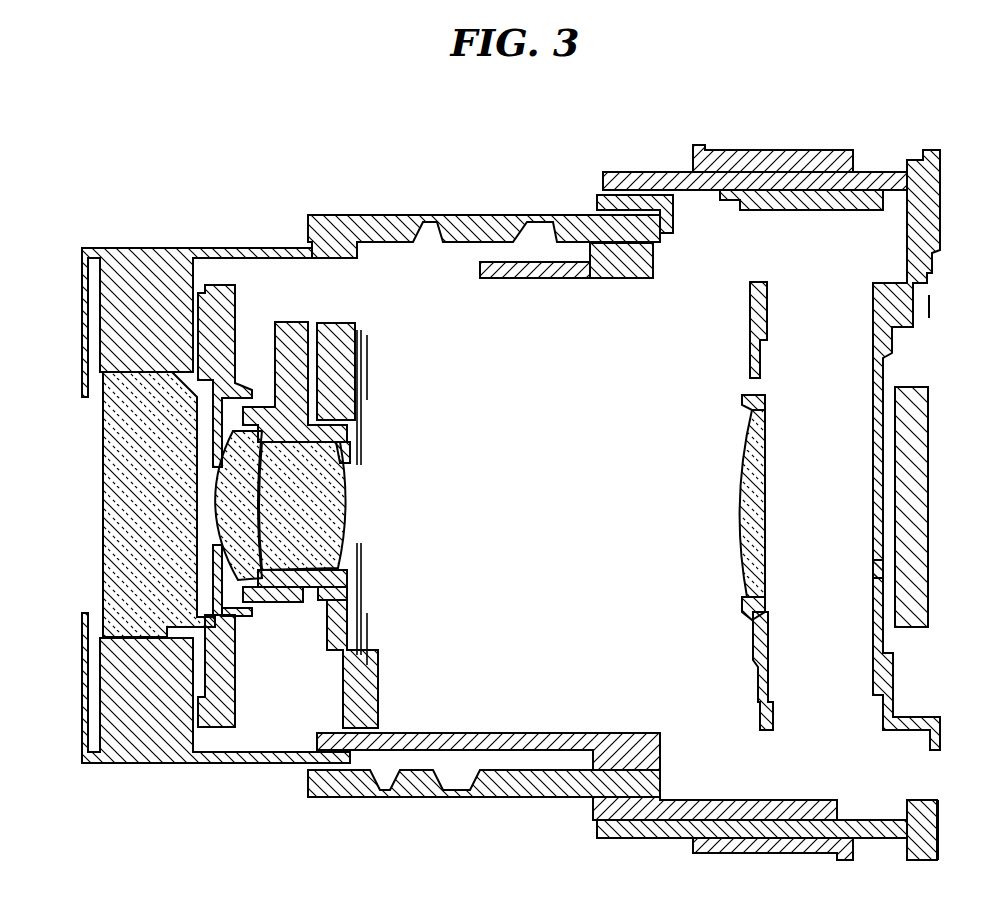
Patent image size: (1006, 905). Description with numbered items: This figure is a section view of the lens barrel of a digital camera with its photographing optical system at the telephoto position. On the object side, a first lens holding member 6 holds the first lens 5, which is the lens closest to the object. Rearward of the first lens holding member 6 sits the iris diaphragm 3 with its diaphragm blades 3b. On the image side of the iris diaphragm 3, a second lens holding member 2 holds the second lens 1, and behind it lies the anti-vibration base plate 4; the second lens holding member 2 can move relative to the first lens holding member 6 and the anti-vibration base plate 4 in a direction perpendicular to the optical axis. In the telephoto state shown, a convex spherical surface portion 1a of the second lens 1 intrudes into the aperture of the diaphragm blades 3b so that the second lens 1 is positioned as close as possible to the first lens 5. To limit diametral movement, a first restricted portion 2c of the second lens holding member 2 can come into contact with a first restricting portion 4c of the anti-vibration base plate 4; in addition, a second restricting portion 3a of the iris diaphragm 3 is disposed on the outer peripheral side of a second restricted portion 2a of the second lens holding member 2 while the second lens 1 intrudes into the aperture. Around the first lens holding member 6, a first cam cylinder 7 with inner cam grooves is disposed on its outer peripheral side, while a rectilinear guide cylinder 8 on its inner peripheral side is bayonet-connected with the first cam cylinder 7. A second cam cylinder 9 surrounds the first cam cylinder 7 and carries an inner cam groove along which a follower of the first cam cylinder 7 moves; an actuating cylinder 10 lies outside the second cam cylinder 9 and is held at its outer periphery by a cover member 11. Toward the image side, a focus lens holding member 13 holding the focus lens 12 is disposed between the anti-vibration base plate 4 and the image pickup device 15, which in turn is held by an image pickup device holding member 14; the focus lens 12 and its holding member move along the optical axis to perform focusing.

The second lens 1 is at (192, 505).
The convex spherical surface portion 1a is at (228, 490).
The second lens holding member 2 is at (292, 330).
The second restricted portion 2a is at (262, 600).
The first restricted portion 2c is at (347, 575).
The iris diaphragm 3 is at (222, 715).
The second restricting portion 3a is at (240, 615).
The diaphragm blades 3b is at (217, 573).
The anti-vibration base plate 4 is at (374, 712).
The first restricting portion 4c is at (352, 597).
The first lens 5 is at (128, 558).
The first lens holding member 6 is at (162, 257).
The first cam cylinder 7 is at (517, 790).
The rectilinear guide cylinder 8 is at (606, 750).
The second cam cylinder 9 is at (660, 825).
The actuating cylinder 10 is at (670, 177).
The cover member 11 is at (777, 150).
The focus lens 12 is at (746, 518).
The focus lens holding member 13 is at (754, 630).
The image pickup device holding member 14 is at (872, 587).
The image pickup device 15 is at (929, 520).